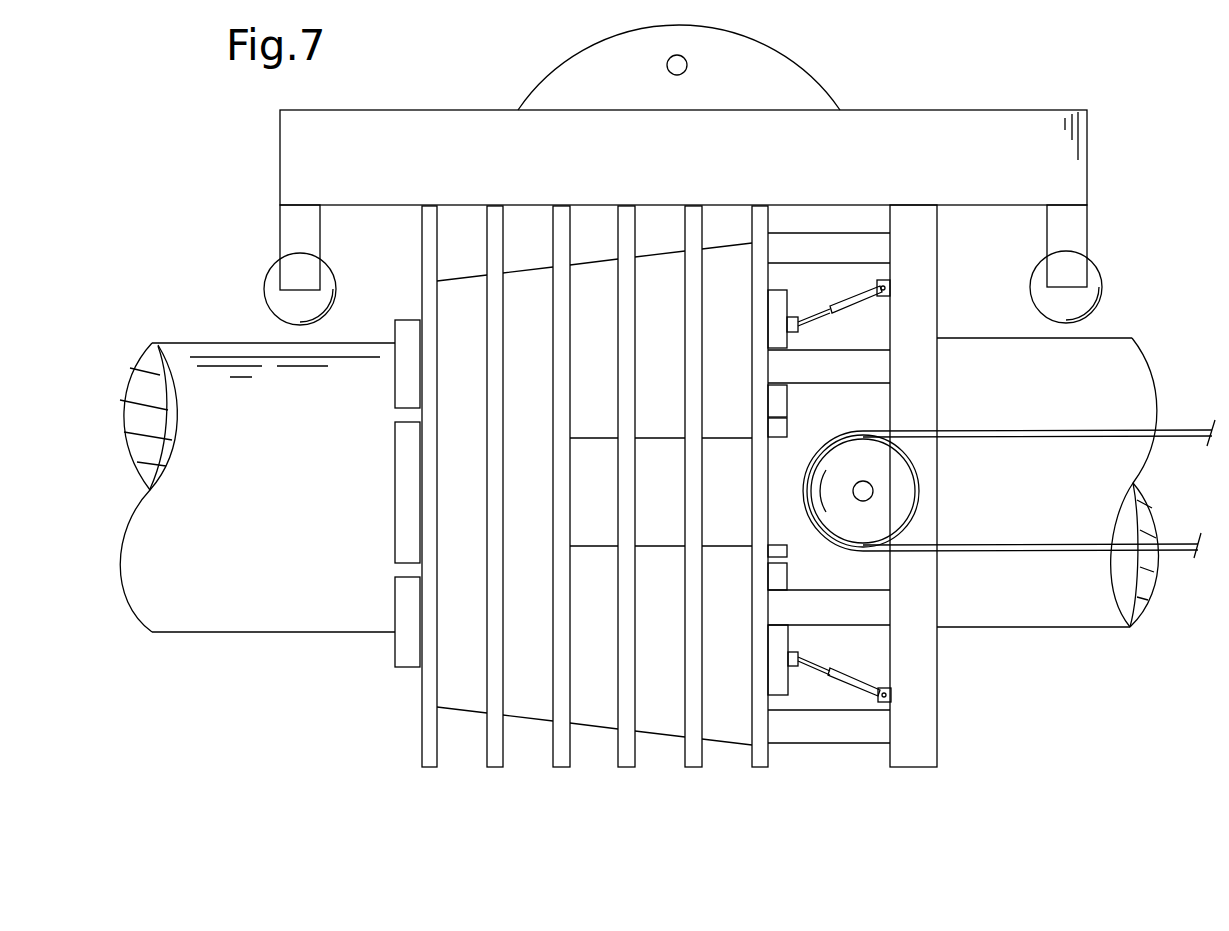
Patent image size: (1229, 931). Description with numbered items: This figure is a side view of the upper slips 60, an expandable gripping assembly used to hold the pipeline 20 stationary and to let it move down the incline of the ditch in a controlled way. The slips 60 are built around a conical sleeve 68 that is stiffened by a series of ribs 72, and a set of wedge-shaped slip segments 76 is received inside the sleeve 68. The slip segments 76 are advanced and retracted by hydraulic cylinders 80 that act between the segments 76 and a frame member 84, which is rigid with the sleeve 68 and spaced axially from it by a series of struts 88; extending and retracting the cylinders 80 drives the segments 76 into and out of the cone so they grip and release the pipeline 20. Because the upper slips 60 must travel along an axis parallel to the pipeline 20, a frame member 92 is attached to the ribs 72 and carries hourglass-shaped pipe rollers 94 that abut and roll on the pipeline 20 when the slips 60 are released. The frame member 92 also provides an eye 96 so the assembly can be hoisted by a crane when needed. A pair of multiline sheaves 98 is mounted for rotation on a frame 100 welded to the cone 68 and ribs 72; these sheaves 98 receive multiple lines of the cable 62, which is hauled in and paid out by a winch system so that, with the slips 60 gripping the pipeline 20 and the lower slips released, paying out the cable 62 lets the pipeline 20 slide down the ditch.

The pipeline 20 is at (187, 333).
The upper slips 60 is at (378, 688).
The cable 62 is at (1070, 548).
The conical sleeve 68 is at (462, 698).
The ribs 72 is at (430, 206).
The slip segments 76 is at (395, 588).
The hydraulic cylinders 80 is at (870, 688).
The frame member 84 is at (920, 738).
The struts 88 is at (837, 735).
The frame member 92 is at (433, 150).
The pipe rollers 94 is at (272, 272).
The eye 96 is at (684, 74).
The multiline sheaves 98 is at (806, 483).
The frame 100 is at (660, 530).